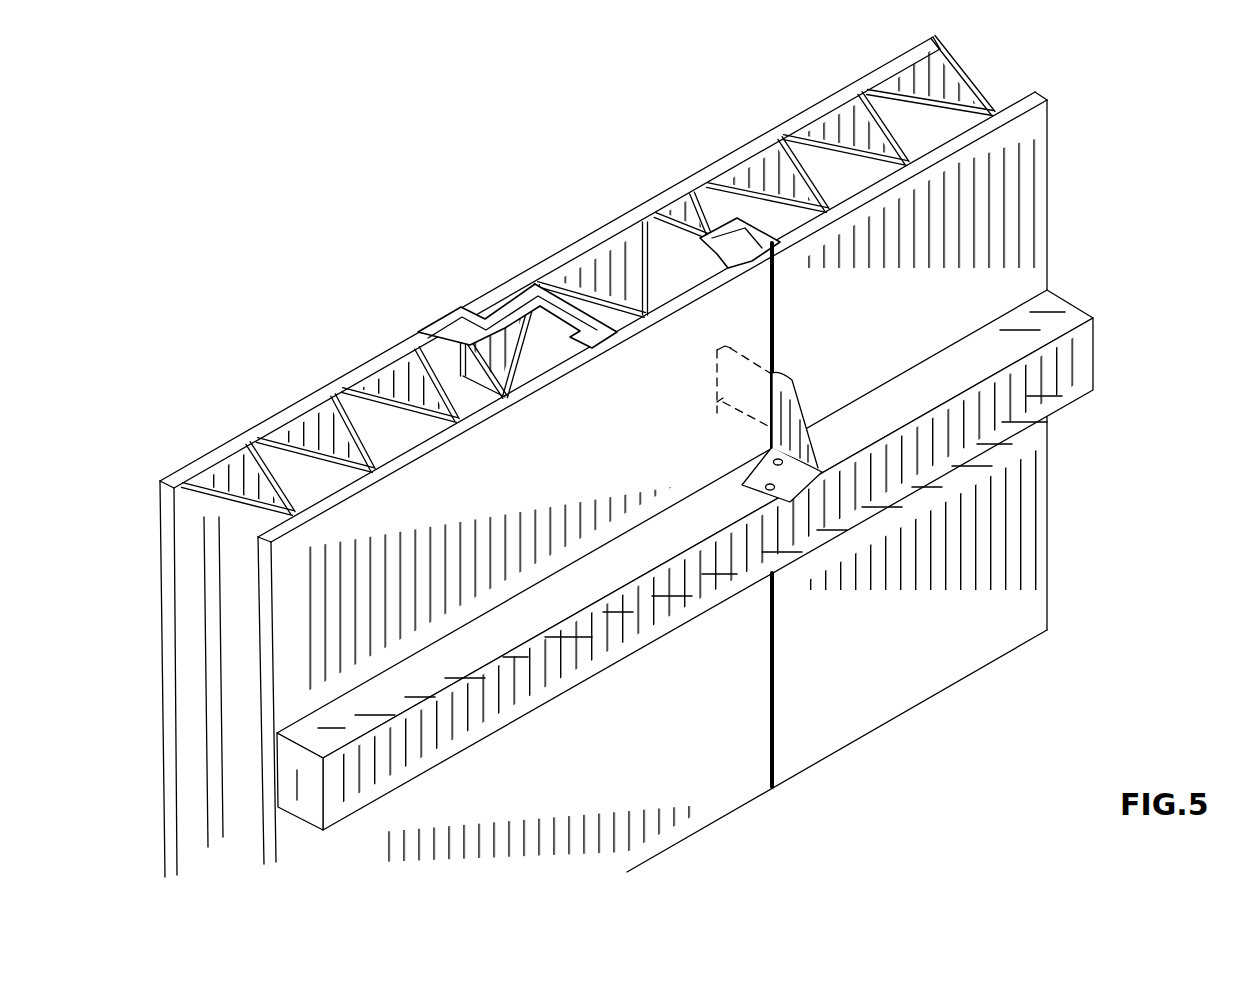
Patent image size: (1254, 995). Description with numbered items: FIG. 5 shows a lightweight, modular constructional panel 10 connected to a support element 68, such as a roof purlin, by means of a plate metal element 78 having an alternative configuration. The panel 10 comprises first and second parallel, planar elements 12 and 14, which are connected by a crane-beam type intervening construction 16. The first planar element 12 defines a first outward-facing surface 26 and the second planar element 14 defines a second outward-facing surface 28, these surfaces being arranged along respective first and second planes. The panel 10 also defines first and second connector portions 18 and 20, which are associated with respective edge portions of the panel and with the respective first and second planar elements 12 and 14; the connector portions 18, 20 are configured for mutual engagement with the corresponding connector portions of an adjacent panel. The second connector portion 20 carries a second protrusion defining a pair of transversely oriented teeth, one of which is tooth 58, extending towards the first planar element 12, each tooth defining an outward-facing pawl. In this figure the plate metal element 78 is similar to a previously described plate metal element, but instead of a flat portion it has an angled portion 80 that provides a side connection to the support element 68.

The constructional panel 10 is at (262, 252).
The first planar element 12 is at (259, 436).
The second planar element 14 is at (990, 136).
The crane-beam type intervening construction 16 is at (305, 410).
The first connector portion 18 is at (568, 232).
The second connector portion 20 is at (681, 337).
The first outward-facing surface 26 is at (343, 355).
The second outward-facing surface 28 is at (523, 415).
The tooth 58 is at (725, 238).
The support element 68 is at (1062, 394).
The plate metal element 78 is at (822, 437).
The angled portion 80 is at (797, 490).